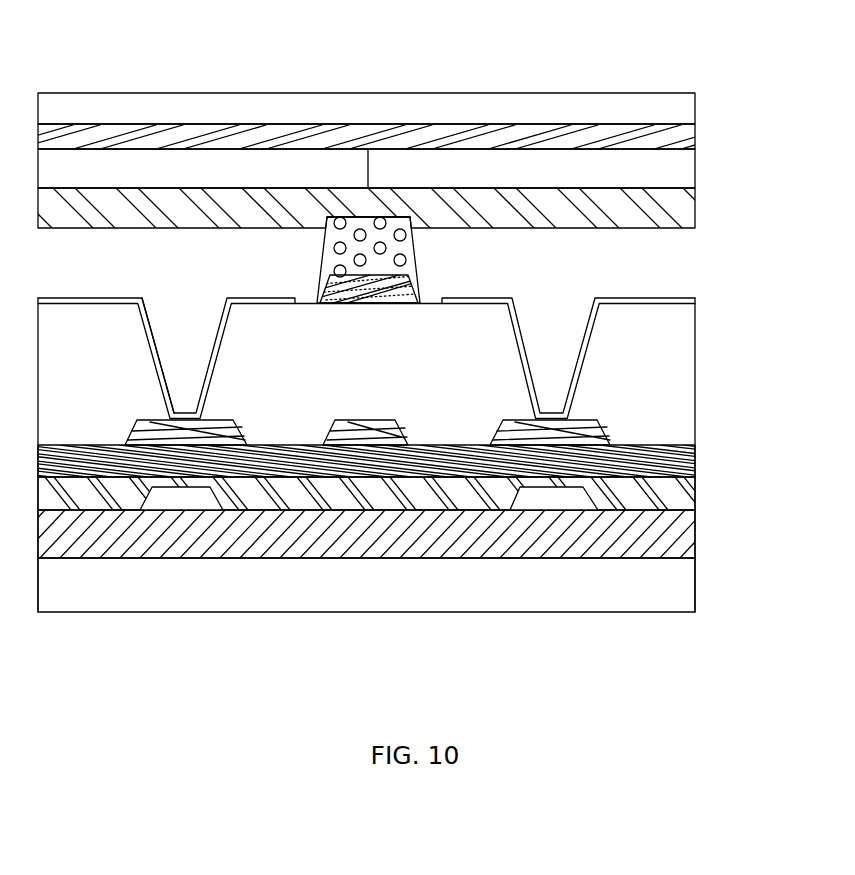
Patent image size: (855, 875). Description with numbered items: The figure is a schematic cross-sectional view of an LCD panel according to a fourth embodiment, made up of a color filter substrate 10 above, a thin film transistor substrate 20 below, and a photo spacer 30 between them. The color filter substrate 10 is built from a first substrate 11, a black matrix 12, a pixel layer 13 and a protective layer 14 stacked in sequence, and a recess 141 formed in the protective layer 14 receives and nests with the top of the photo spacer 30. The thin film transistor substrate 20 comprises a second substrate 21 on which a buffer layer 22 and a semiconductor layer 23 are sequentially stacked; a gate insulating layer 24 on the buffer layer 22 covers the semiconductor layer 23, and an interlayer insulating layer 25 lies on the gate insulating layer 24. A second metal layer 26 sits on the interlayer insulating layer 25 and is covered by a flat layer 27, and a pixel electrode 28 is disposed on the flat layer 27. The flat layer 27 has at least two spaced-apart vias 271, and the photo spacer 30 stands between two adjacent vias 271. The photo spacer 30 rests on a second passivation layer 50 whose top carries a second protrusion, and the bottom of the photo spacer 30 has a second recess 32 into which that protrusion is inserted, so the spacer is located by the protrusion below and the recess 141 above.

The color filter substrate 10 is at (228, 56).
The first substrate 11 is at (696, 107).
The black matrix 12 is at (696, 139).
The pixel layer 13 is at (696, 175).
The protective layer 14 is at (696, 218).
The groove in black matrix 141 is at (374, 216).
The photo spacer 30 is at (414, 252).
The second recess 32 is at (396, 305).
The second passivation layer 50 is at (344, 305).
The thin film transistor substrate 20 is at (322, 655).
The second substrate 21 is at (696, 585).
The buffer layer 22 is at (696, 540).
The semiconductor layer 23 is at (547, 497).
The gate insulating layer 24 is at (696, 500).
The interlayer insulating layer 25 is at (696, 460).
The second metal layer 26 is at (207, 438).
The flat layer 27 is at (696, 378).
The via 271 is at (158, 341).
The pixel electrode 28 is at (696, 302).